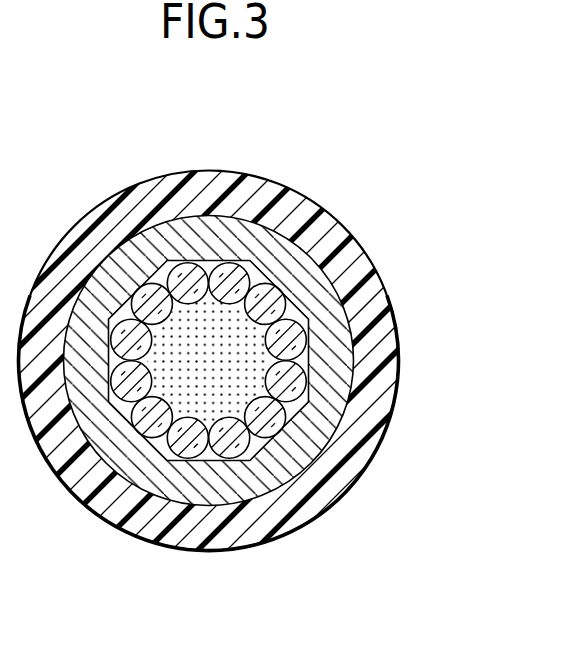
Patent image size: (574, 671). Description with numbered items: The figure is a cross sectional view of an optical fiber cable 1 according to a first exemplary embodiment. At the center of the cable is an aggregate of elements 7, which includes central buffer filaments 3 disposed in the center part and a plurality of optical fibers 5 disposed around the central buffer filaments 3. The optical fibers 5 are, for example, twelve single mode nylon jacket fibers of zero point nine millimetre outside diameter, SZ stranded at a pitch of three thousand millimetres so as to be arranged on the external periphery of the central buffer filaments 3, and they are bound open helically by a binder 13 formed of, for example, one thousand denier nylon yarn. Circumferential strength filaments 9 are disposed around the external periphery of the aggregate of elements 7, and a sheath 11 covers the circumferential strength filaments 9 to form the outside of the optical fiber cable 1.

The optical fiber cable 1 is at (416, 171).
The central buffer filaments 3 is at (237, 373).
The optical fibers 5 is at (310, 326).
The aggregate of elements 7 is at (205, 250).
The circumferential strength filaments 9 is at (303, 437).
The sheath 11 is at (372, 271).
The binder 13 is at (131, 225).